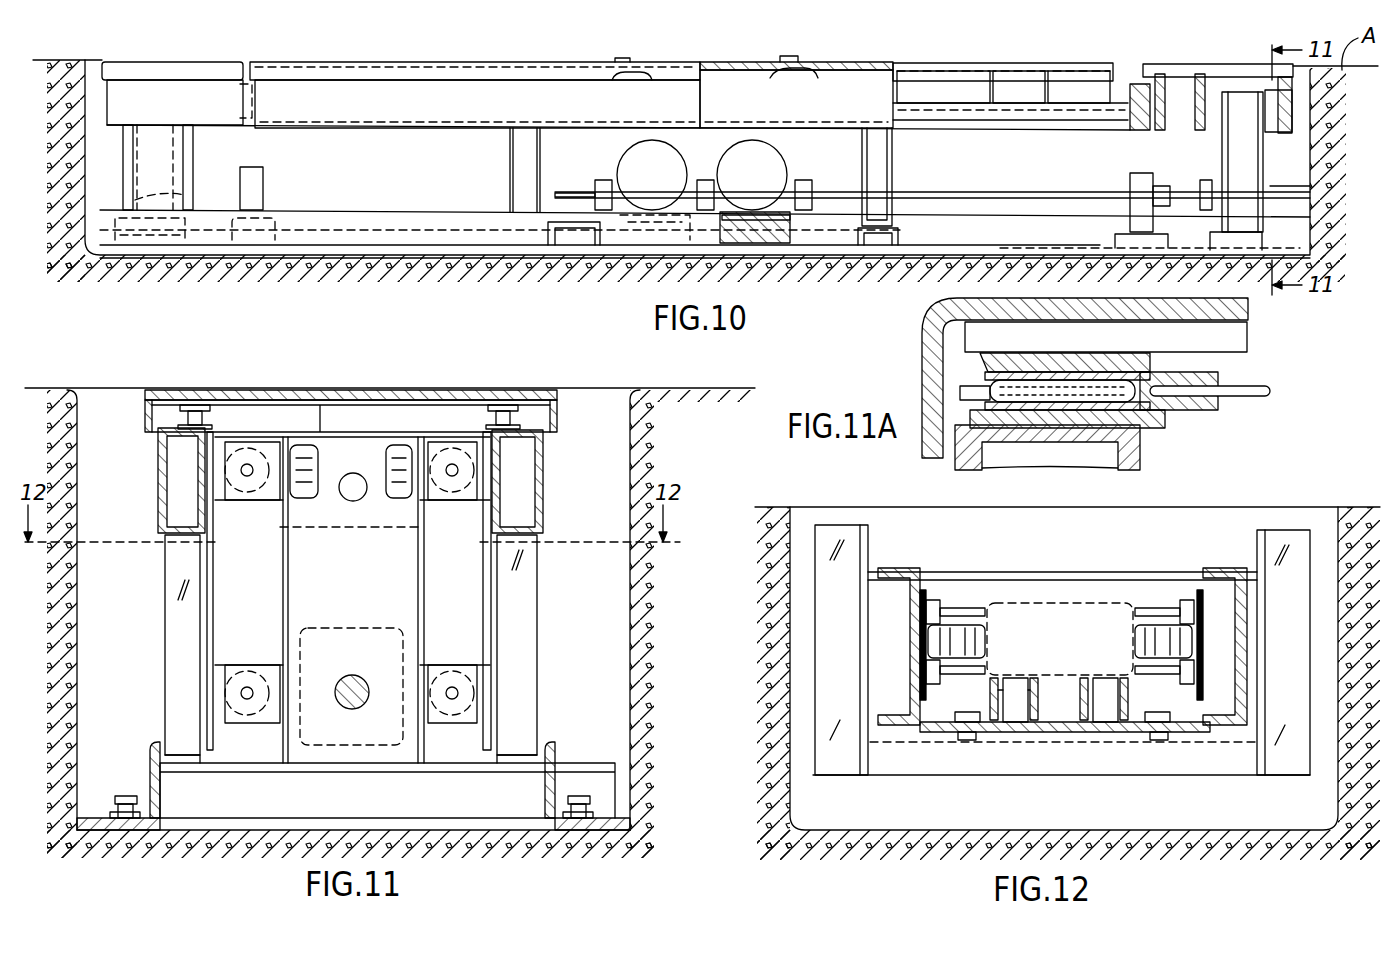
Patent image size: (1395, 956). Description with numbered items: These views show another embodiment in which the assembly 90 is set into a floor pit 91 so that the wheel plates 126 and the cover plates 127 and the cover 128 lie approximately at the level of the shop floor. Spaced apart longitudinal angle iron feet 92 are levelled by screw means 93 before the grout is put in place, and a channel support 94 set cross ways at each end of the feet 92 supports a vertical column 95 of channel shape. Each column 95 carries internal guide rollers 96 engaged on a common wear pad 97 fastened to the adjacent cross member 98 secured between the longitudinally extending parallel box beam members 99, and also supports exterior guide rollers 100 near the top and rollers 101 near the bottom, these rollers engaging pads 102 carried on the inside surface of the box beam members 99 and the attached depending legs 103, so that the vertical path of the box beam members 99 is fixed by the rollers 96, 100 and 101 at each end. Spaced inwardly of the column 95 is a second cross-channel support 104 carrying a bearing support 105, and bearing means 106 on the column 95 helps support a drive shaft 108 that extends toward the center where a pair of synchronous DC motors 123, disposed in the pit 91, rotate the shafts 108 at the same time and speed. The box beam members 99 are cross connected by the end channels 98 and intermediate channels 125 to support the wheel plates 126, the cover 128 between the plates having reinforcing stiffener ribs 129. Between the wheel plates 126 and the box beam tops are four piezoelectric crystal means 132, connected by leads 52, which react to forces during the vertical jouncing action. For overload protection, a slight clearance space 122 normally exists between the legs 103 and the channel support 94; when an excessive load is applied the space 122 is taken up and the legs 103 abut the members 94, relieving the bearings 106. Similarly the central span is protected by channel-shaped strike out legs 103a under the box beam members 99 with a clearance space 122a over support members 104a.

In FIG. 11A, the leads 52 is at (1258, 393).
In FIG. 10, the assembly 90 is at (560, 56).
In FIG. 10, the floor pit 91 is at (1305, 130).
In FIG. 11, the floor pit 91 is at (628, 632).
In FIG. 12, the floor pit 91 is at (915, 835).
In FIG. 11, the angle iron feet 92 is at (152, 742).
In FIG. 12, the angle iron feet 92 is at (852, 650).
In FIG. 11, the screw means 93 is at (120, 796).
In FIG. 10, the channel support 94 is at (172, 258).
In FIG. 11, the channel support 94 is at (392, 799).
In FIG. 10, the vertical column 95 is at (183, 181).
In FIG. 11, the vertical column 95 is at (362, 568).
In FIG. 12, the vertical column 95 is at (1045, 603).
In FIG. 11, the internal guide rollers 96 is at (303, 498).
In FIG. 12, the internal guide rollers 96 is at (1012, 678).
In FIG. 12, the wear pad 97 is at (1035, 734).
In FIG. 10, the cross member 98 is at (1290, 120).
In FIG. 12, the cross member 98 is at (1215, 776).
In FIG. 10, the box beam members 99 is at (388, 120).
In FIG. 11, the box beam members 99 is at (158, 468).
In FIG. 11A, the box beam members 99 is at (1140, 458).
In FIG. 12, the box beam members 99 is at (1120, 735).
In FIG. 11, the exterior guide rollers 100 is at (355, 415).
In FIG. 12, the exterior guide rollers 100 is at (958, 625).
In FIG. 11, the rollers 101 is at (354, 630).
In FIG. 11, the pads 102 is at (215, 585).
In FIG. 12, the pads 102 is at (920, 700).
In FIG. 10, the depending legs 103 is at (165, 162).
In FIG. 11, the depending legs 103 is at (175, 636).
In FIG. 12, the depending legs 103 is at (915, 615).
In FIG. 10, the strike out legs 103a is at (510, 175).
In FIG. 10, the second cross-channel support 104 is at (290, 229).
In FIG. 10, the support members 104a is at (560, 248).
In FIG. 10, the bearing support 105 is at (265, 190).
In FIG. 10, the bearing means 106 is at (1130, 188).
In FIG. 11, the bearing means 106 is at (322, 640).
In FIG. 10, the drive shaft 108 is at (570, 192).
In FIG. 10, the clearance space 122 is at (190, 260).
In FIG. 11, the clearance space 122 is at (185, 762).
In FIG. 10, the clearance space 122a is at (700, 232).
In FIG. 10, the DC motors 123 is at (702, 175).
In FIG. 10, the intermediate channels 125 is at (270, 108).
In FIG. 10, the wheel plates 126 is at (342, 62).
In FIG. 11, the wheel plates 126 is at (355, 390).
In FIG. 11A, the wheel plates 126 is at (1250, 342).
In FIG. 10, the cover plates 127 is at (196, 40).
In FIG. 10, the cover 128 is at (725, 70).
In FIG. 10, the stiffener ribs 129 is at (640, 85).
In FIG. 11, the piezoelectric crystal means 132 is at (200, 405).
In FIG. 11A, the piezoelectric crystal means 132 is at (978, 386).